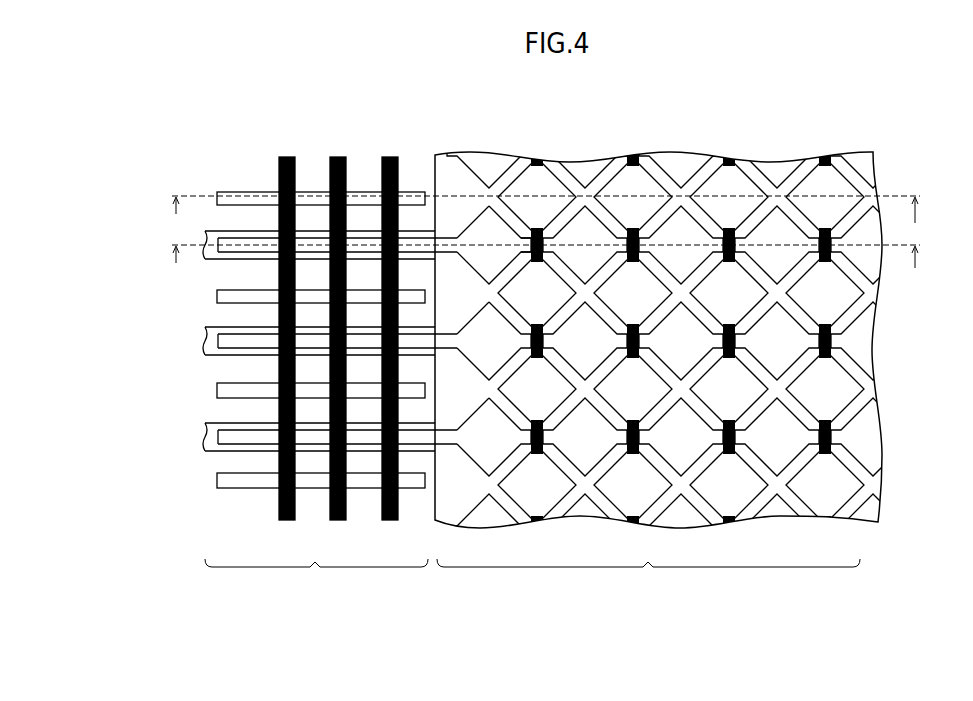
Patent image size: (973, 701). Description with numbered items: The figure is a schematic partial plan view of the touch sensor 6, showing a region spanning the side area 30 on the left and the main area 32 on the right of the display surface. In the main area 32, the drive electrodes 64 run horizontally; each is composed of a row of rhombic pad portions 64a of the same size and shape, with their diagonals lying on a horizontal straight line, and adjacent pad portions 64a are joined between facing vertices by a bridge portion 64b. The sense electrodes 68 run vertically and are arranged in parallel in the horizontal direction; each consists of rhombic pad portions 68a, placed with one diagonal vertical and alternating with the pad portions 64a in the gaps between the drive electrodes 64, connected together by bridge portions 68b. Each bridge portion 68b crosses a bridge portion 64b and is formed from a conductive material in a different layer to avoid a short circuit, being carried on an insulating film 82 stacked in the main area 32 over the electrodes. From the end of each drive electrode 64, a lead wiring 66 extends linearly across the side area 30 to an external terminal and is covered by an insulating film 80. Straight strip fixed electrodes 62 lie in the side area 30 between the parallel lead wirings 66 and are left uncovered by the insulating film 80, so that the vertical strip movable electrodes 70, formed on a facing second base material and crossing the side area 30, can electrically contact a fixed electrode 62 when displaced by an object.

The touch sensor 6 is at (889, 111).
The side area 30 is at (316, 352).
The main area 32 is at (698, 337).
The fixed electrode 62 is at (221, 192).
The drive electrode 64 is at (894, 349).
The pad portion 64a is at (467, 233).
The bridge portion 64b is at (521, 238).
The lead wiring 66 is at (222, 240).
The sense electrode 68 is at (730, 155).
The pad portion 68a is at (545, 183).
The bridge portion 68b is at (553, 238).
The movable electrode 70 is at (287, 157).
The insulating film 80 is at (252, 238).
The insulating film 82 is at (450, 165).